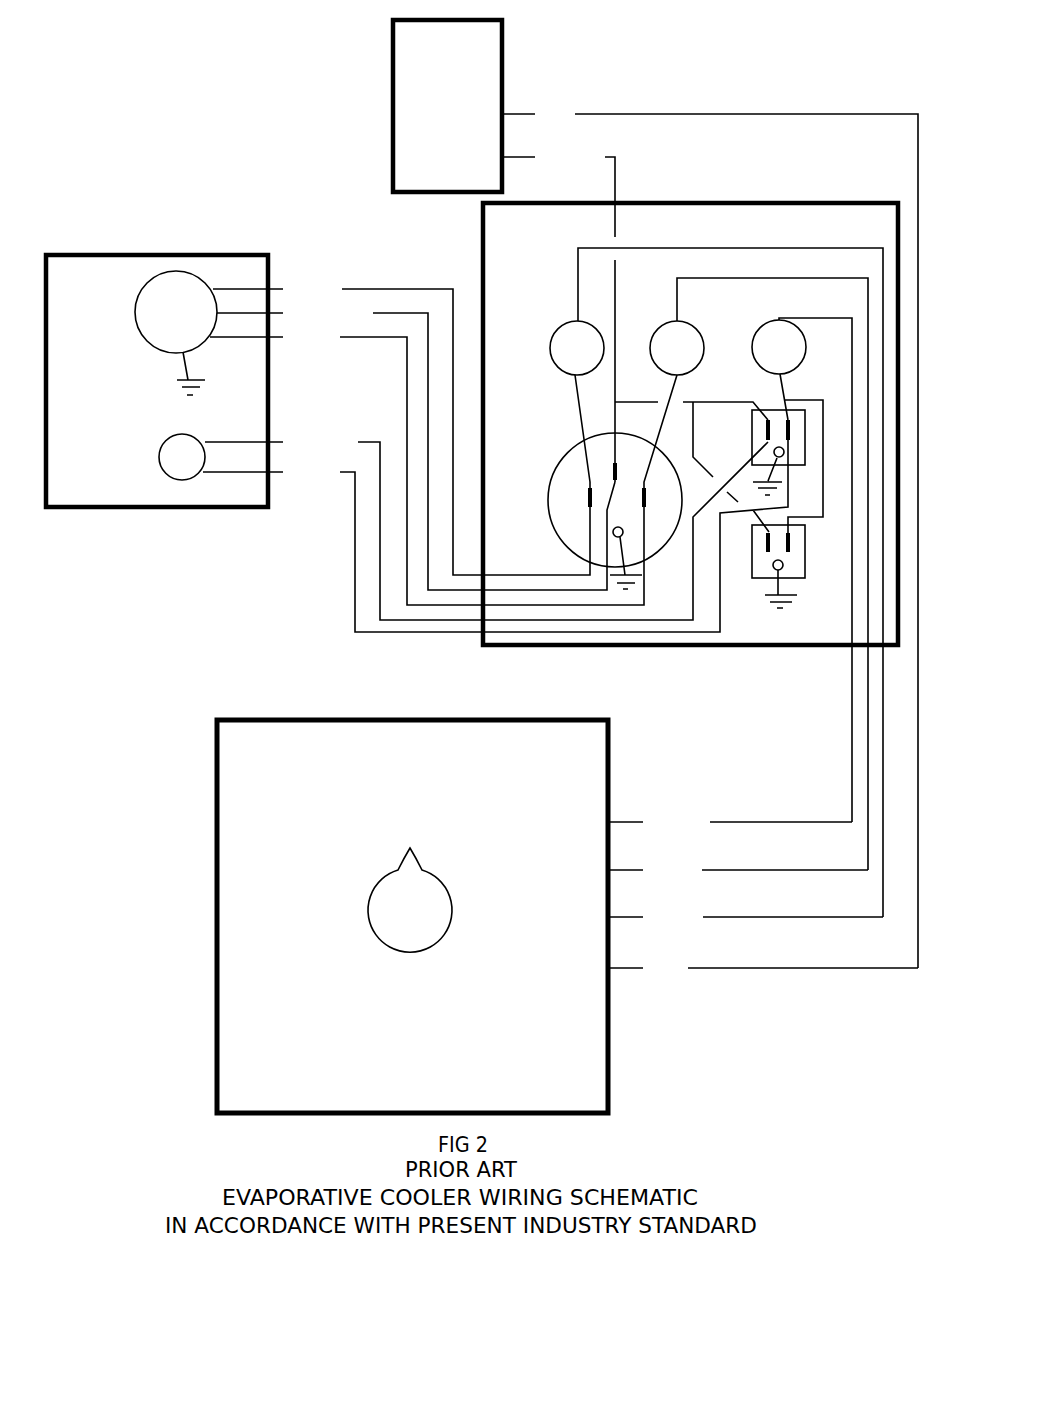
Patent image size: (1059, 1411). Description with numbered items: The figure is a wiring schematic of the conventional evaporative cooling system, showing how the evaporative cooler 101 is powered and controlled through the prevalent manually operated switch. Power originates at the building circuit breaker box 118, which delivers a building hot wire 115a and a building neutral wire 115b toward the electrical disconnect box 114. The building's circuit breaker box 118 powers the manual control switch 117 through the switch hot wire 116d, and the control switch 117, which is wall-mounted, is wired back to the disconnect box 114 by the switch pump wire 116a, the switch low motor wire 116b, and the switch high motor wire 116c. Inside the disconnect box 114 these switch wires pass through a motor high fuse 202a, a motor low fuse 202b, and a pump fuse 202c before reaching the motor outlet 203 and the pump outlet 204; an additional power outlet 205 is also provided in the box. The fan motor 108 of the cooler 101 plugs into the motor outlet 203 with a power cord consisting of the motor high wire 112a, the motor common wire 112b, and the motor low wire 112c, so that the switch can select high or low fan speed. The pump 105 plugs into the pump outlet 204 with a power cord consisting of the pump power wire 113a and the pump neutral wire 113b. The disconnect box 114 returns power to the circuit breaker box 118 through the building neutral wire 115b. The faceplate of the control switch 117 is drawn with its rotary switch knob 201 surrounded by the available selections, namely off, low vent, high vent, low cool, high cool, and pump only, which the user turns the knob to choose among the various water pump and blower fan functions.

The evaporative cooler 101 is at (192, 508).
The pump 105 is at (178, 480).
The fan motor 108 is at (174, 355).
The motor high wire 112a is at (440, 287).
The motor common wire 112b is at (417, 310).
The motor low wire 112c is at (390, 333).
The pump power wire 113a is at (353, 545).
The pump neutral wire 113b is at (378, 575).
The electrical disconnect box 114 is at (648, 645).
The building hot wire 115a is at (520, 112).
The building neutral wire 115b is at (510, 159).
The switch pump wire 116a is at (805, 822).
The switch low motor wire 116b is at (805, 870).
The switch high motor wire 116c is at (805, 917).
The switch hot wire 116d is at (805, 968).
The manual control switch 117 is at (608, 1040).
The building circuit breaker box 118 is at (393, 52).
The rotary switch knob 201 is at (452, 891).
The motor high fuse 202a is at (570, 377).
The motor low fuse 202b is at (686, 374).
The pump fuse 202c is at (752, 353).
The motor outlet 203 is at (565, 460).
The pump outlet 204 is at (752, 414).
The additional power outlet 205 is at (756, 578).